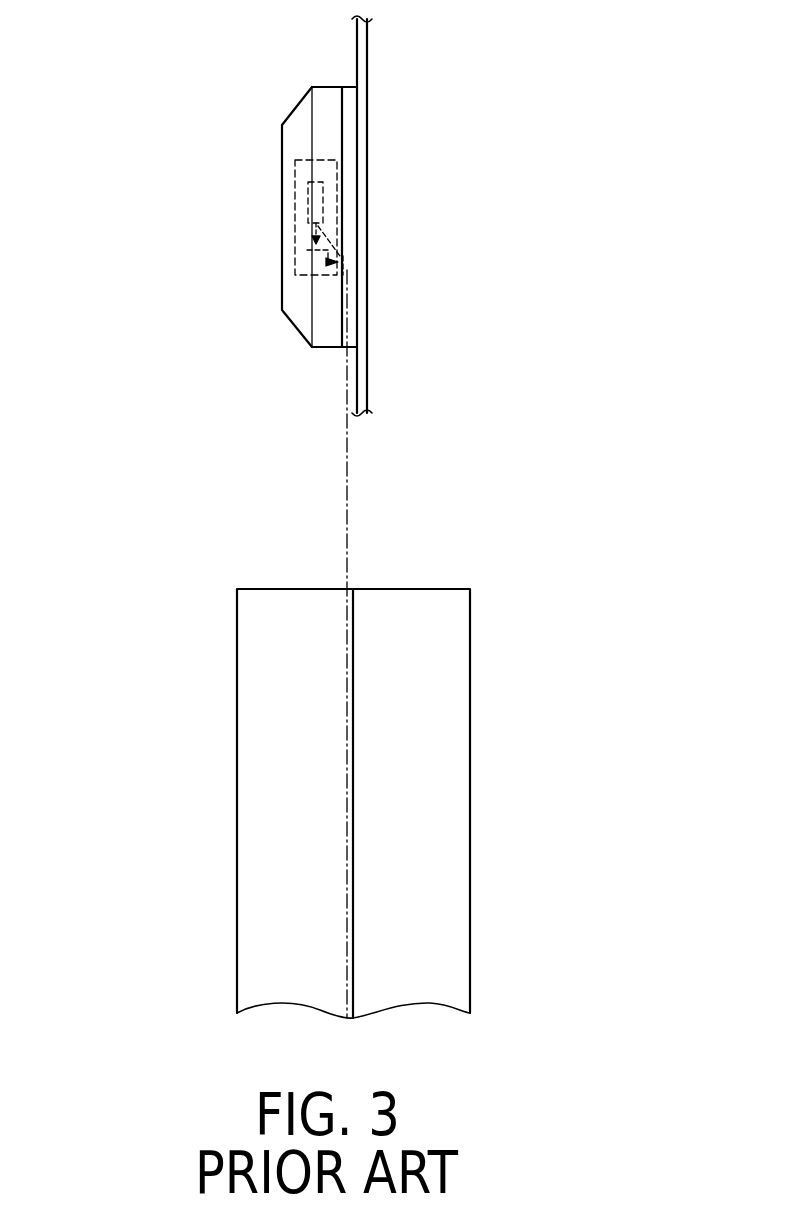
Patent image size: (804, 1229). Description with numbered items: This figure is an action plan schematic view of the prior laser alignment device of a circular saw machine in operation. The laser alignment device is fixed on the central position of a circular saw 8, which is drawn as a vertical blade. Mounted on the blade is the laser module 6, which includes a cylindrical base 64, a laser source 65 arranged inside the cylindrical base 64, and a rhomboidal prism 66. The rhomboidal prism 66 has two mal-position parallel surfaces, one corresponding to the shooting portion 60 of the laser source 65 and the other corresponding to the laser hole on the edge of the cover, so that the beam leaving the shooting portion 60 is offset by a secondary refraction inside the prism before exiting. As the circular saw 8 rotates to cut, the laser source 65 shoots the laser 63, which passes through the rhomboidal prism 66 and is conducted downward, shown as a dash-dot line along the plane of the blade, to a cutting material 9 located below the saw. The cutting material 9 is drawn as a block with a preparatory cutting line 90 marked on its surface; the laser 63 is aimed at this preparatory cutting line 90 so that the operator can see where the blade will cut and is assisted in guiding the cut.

The laser module 6 is at (282, 208).
The circular saw 8 is at (370, 52).
The cutting material 9 is at (453, 652).
The shooting portion 60 is at (340, 247).
The laser 63 is at (347, 622).
The cylindrical base 64 is at (337, 170).
The laser source 65 is at (323, 202).
The rhomboidal prism 66 is at (343, 263).
The preparatory cutting line 90 is at (353, 695).